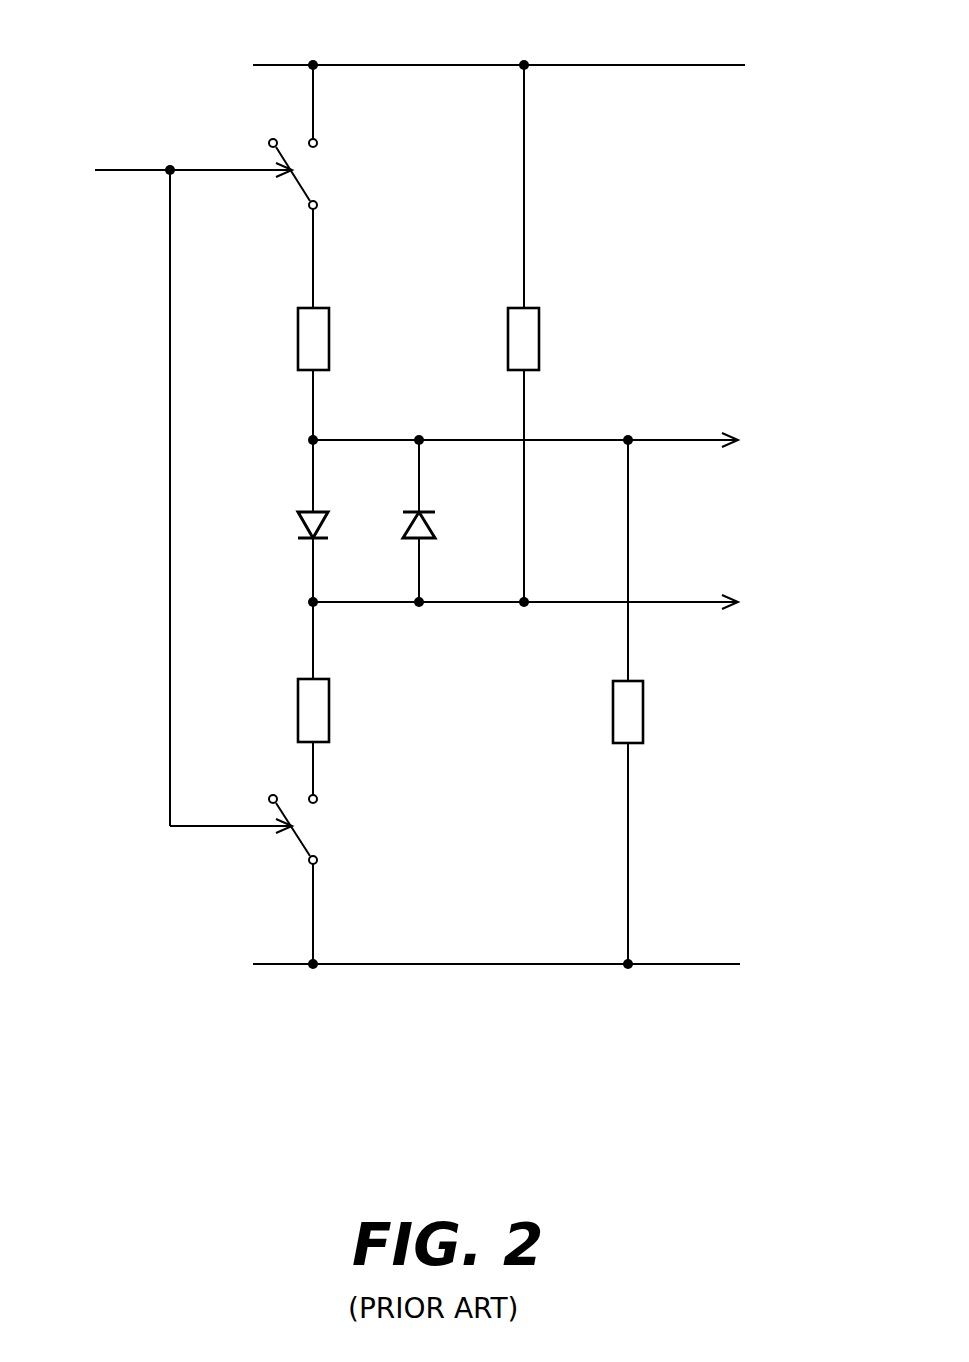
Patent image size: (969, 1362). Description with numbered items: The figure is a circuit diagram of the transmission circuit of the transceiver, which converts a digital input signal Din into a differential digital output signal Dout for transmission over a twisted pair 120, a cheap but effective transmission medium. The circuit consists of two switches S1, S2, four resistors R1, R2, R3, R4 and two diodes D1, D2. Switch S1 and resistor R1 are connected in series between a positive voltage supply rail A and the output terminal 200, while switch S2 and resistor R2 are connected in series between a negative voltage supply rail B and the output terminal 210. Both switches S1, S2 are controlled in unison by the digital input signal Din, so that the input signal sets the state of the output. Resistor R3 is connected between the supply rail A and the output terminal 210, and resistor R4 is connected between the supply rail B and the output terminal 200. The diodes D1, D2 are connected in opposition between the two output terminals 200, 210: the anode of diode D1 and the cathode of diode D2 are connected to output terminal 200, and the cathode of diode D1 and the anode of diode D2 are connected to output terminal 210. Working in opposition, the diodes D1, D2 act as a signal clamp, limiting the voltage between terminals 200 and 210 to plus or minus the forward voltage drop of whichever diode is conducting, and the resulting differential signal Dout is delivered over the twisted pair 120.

The positive voltage supply rail A is at (313, 62).
The negative voltage supply rail B is at (313, 968).
The digital input signal Din is at (170, 494).
The differential digital output signal Dout is at (749, 519).
The switch S1 is at (302, 185).
The switch S2 is at (305, 836).
The resistor R1 is at (329, 322).
The resistor R2 is at (329, 718).
The resistor R3 is at (539, 340).
The resistor R4 is at (643, 700).
The diode D1 is at (298, 527).
The diode D2 is at (435, 532).
The output terminal 200 is at (419, 438).
The output terminal 210 is at (422, 605).
The twisted pair 120 is at (727, 490).